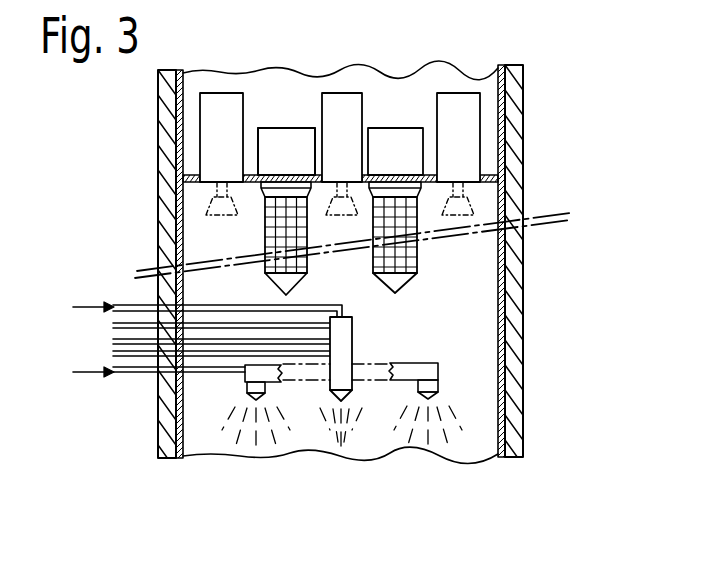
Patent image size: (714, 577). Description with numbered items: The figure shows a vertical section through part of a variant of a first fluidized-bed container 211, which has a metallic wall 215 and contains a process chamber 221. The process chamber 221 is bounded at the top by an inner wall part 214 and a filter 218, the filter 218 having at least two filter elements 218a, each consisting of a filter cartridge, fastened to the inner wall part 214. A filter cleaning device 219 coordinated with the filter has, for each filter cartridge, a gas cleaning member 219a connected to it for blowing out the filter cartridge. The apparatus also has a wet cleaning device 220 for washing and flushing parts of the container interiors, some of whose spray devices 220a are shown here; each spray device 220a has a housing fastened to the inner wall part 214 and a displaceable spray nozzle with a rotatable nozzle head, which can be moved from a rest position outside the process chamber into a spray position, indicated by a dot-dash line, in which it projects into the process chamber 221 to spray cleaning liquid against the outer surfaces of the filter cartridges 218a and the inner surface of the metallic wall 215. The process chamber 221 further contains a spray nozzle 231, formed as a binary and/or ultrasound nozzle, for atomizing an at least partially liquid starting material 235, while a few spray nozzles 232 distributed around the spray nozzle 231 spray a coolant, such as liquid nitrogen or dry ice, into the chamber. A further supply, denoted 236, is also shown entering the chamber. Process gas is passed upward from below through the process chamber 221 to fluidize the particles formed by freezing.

The first fluidized-bed container 211 is at (158, 95).
The metallic wall 215 is at (178, 118).
The inner wall part 214 is at (188, 179).
The wet cleaning device 220 is at (202, 138).
The spray devices 220a is at (202, 155).
The filter cleaning device 219 is at (267, 127).
The gas cleaning member 219a is at (283, 127).
The filter 218 is at (265, 228).
The filter elements 218a is at (418, 265).
The starting material 235 is at (96, 302).
The supply line 236 is at (96, 368).
The spray nozzle 231 is at (352, 353).
The spray nozzles 232 is at (243, 390).
The process chamber 221 is at (203, 409).